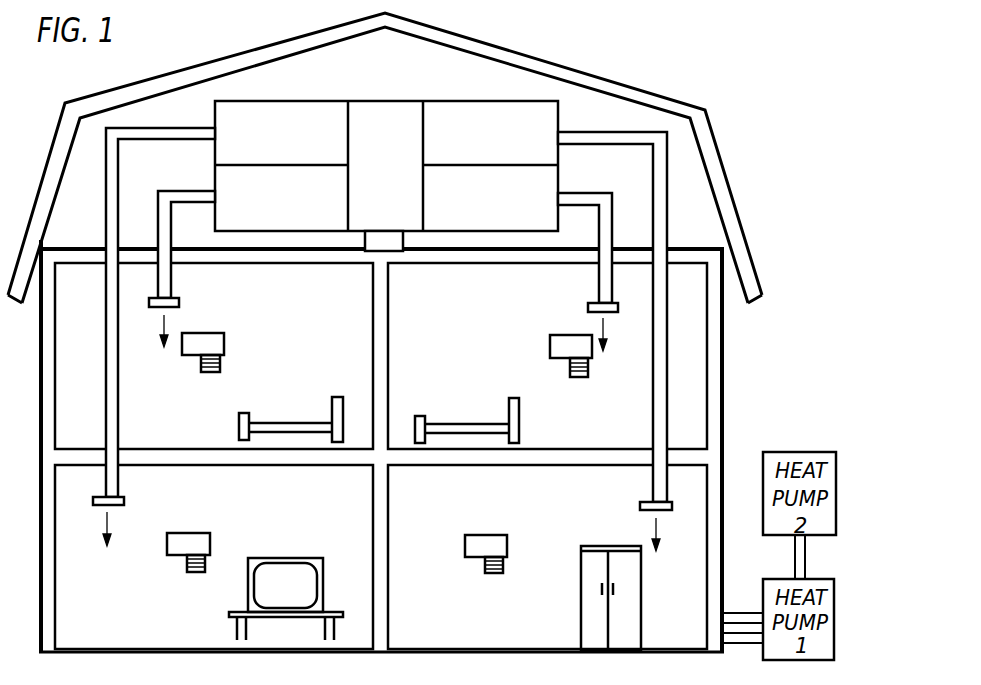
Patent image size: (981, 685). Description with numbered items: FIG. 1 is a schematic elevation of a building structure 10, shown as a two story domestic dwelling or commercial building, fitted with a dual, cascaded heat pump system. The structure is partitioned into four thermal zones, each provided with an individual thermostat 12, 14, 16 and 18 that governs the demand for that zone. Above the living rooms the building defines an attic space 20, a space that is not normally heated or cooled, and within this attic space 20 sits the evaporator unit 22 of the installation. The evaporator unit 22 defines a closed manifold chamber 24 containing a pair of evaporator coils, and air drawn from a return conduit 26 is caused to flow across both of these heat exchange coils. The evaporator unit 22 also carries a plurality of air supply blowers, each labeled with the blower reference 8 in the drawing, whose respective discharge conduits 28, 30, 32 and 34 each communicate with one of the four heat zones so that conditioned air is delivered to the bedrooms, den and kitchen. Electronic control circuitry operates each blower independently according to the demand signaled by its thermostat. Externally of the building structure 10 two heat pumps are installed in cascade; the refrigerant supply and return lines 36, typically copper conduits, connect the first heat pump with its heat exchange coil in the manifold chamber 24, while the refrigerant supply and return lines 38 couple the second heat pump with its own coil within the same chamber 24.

The blower 8 is at (384, 167).
The building structure 10 is at (740, 173).
The thermostat 12 is at (207, 340).
The thermostat 14 is at (195, 545).
The thermostat 16 is at (568, 345).
The thermostat 18 is at (490, 545).
The attic space 20 is at (462, 88).
The evaporator unit 22 is at (362, 100).
The closed chamber 24 is at (383, 115).
The return conduit 26 is at (384, 240).
The discharge conduit 28 is at (185, 190).
The discharge conduit 30 is at (104, 190).
The discharge conduit 32 is at (580, 193).
The discharge conduit 34 is at (668, 188).
The refrigerant supply and return lines 36 is at (741, 636).
The refrigerant supply and return lines 38 is at (826, 549).